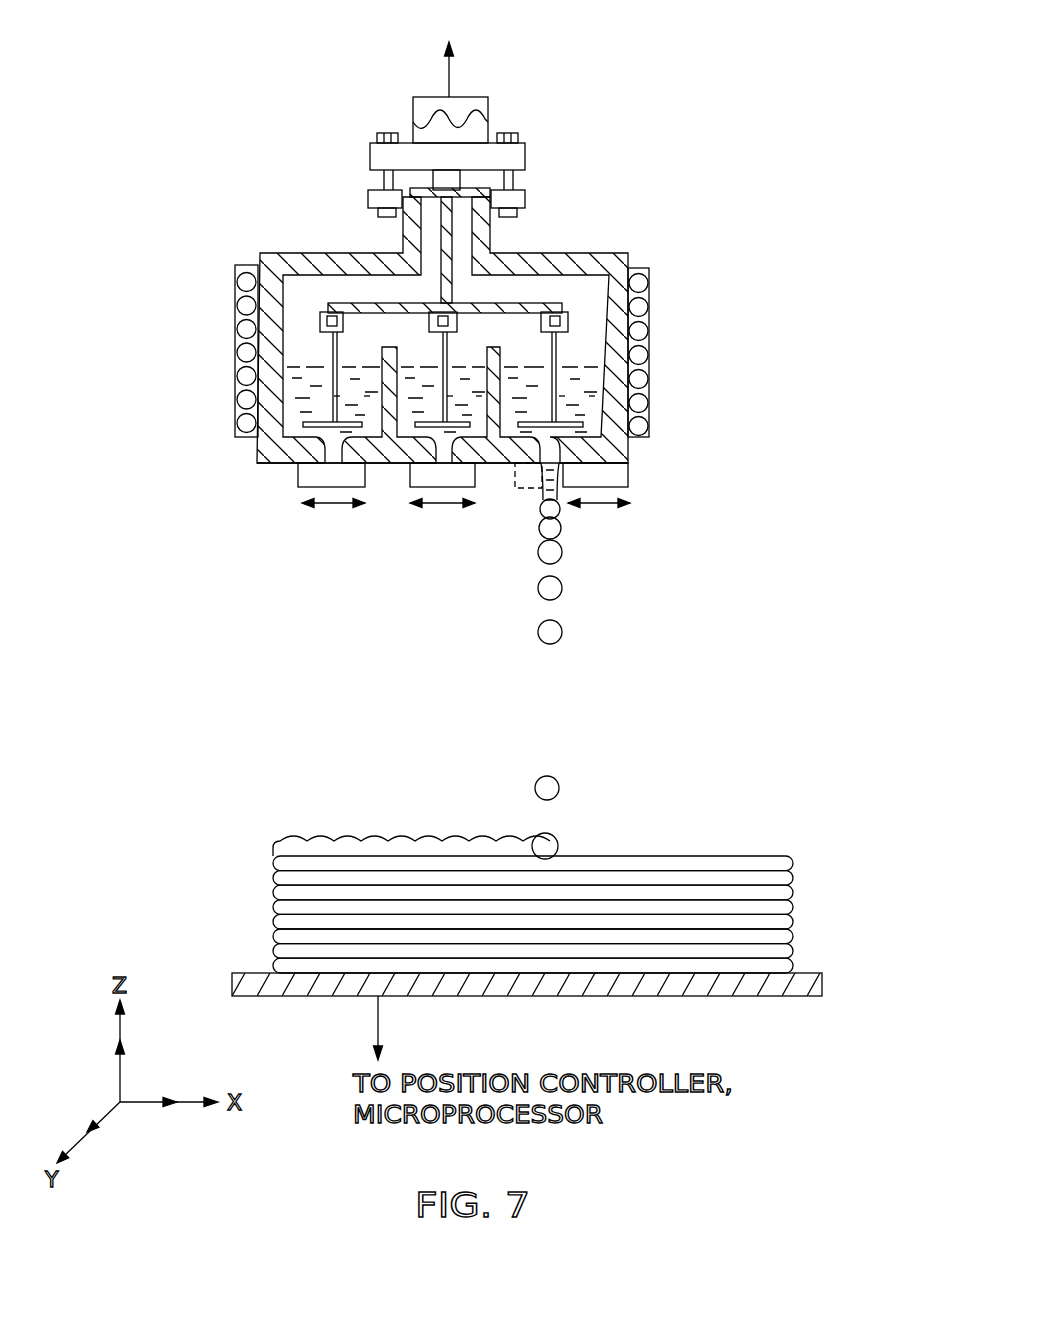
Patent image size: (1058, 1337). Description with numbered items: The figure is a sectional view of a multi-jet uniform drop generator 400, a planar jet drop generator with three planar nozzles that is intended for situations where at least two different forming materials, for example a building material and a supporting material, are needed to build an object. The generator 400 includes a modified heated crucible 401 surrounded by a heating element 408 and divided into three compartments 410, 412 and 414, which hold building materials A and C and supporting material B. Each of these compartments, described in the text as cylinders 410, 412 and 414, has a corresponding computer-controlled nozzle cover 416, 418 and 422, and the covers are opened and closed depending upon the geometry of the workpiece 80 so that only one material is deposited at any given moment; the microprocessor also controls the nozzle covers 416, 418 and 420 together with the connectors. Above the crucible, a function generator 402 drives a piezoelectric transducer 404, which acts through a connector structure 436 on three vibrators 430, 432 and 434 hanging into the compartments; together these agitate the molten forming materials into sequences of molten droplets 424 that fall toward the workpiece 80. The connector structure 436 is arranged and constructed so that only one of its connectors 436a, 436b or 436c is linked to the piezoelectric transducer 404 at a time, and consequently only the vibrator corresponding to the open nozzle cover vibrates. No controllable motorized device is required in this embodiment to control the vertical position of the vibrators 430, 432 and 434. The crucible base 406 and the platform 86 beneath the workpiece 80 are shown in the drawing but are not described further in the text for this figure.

The multi-jet uniform drop generator 400 is at (200, 88).
The function generator 402 is at (488, 108).
The piezoelectric transducer 404 is at (433, 180).
The modified heated crucible 401 is at (260, 255).
The connector structure 436 is at (452, 250).
The connector 436a is at (328, 316).
The connector 436b is at (445, 316).
The connector 436c is at (567, 320).
The heating element 408 is at (640, 285).
The compartment 410 is at (310, 352).
The compartment 412 is at (422, 355).
The compartment 414 is at (580, 357).
The vibrator 430 is at (305, 423).
The vibrator 432 is at (450, 357).
The vibrator 434 is at (580, 427).
The housing base 406 is at (275, 455).
The nozzle cover 416 is at (302, 487).
The nozzle cover 418 is at (415, 487).
The nozzle cover 420 is at (630, 473).
The nozzle cover 422 is at (537, 512).
The molten droplets 424 is at (560, 587).
The workpiece 80 is at (833, 850).
The substrate / platform 86 is at (777, 992).